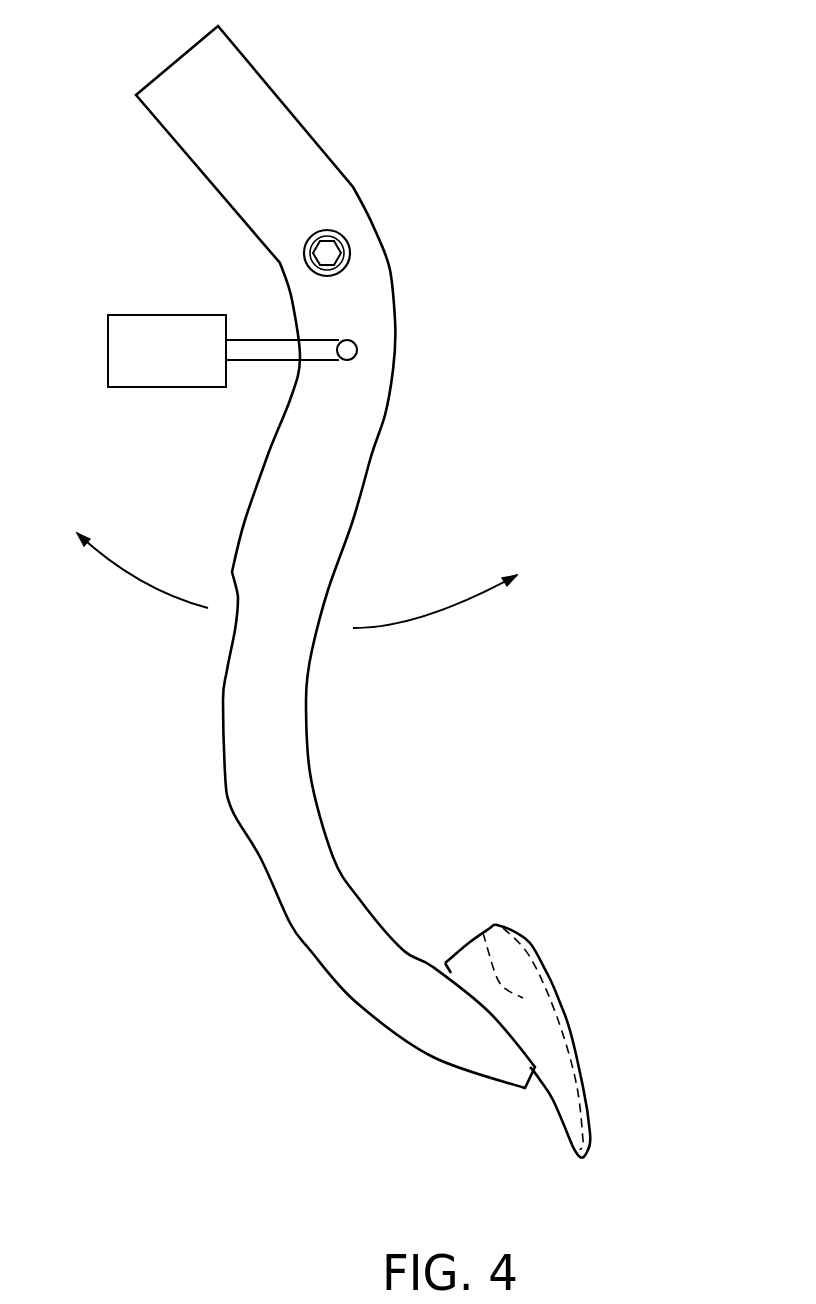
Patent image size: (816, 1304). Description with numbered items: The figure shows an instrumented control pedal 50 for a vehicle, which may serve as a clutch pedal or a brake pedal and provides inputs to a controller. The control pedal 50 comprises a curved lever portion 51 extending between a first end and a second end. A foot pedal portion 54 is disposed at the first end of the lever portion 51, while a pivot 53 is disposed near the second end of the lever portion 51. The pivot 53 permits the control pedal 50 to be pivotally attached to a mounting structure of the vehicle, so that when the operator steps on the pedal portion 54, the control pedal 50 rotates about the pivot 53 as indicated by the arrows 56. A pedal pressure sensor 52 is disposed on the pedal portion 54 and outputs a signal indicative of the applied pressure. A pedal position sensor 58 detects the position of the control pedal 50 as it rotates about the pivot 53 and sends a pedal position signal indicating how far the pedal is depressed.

The control pedal 50 is at (562, 100).
The lever portion 51 is at (377, 450).
The pedal pressure sensor 52 is at (587, 1097).
The pivot 53 is at (352, 252).
The foot pedal portion 54 is at (483, 933).
The arrows 56 is at (143, 583).
The pedal position sensor 58 is at (190, 370).